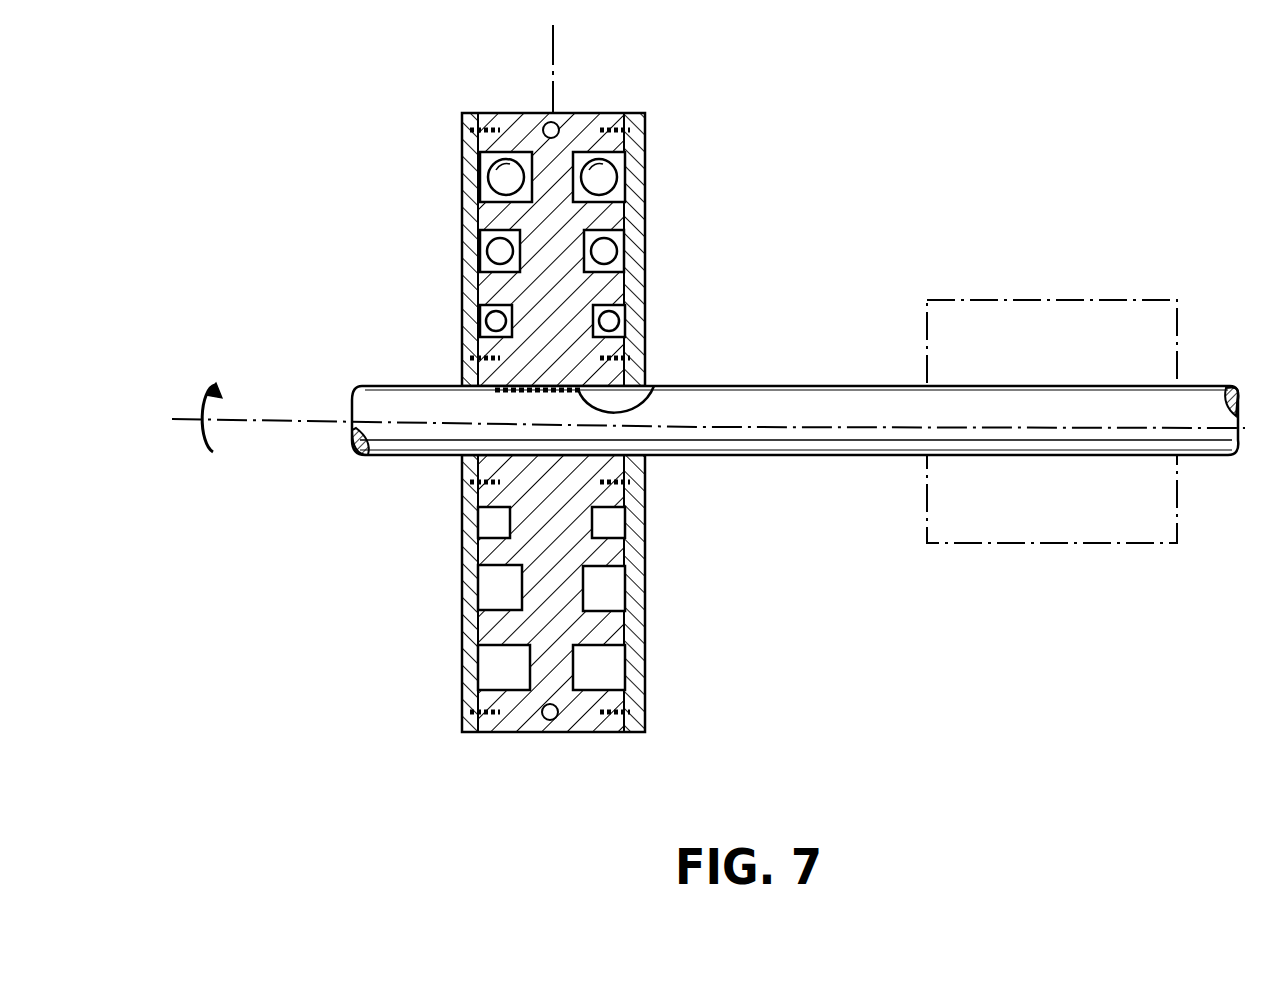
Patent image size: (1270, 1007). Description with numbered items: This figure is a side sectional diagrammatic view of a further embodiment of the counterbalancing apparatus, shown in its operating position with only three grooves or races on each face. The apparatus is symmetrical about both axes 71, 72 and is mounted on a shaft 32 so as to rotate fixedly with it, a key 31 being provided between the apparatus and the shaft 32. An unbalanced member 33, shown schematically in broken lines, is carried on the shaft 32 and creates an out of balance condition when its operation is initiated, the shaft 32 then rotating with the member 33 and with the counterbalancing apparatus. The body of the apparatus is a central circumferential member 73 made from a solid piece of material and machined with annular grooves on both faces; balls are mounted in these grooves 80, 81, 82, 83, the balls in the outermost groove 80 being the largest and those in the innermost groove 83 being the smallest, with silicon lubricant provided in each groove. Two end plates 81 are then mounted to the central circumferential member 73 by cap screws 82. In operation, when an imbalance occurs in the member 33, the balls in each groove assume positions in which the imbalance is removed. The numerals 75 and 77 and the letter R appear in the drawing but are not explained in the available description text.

The key 31 is at (652, 390).
The shaft 32 is at (795, 382).
The unbalanced member 33 is at (1057, 300).
The axis 71 is at (281, 418).
The axis 72 is at (557, 45).
The central circumferential member 73 is at (594, 205).
The bearing assembly 75 is at (578, 378).
The housing half 77 is at (569, 450).
The outermost groove 80 is at (645, 183).
The end plates 81 is at (462, 655).
The cap screws 82 is at (462, 130).
The innermost groove 83 is at (652, 361).
The direction of rotation R is at (200, 394).